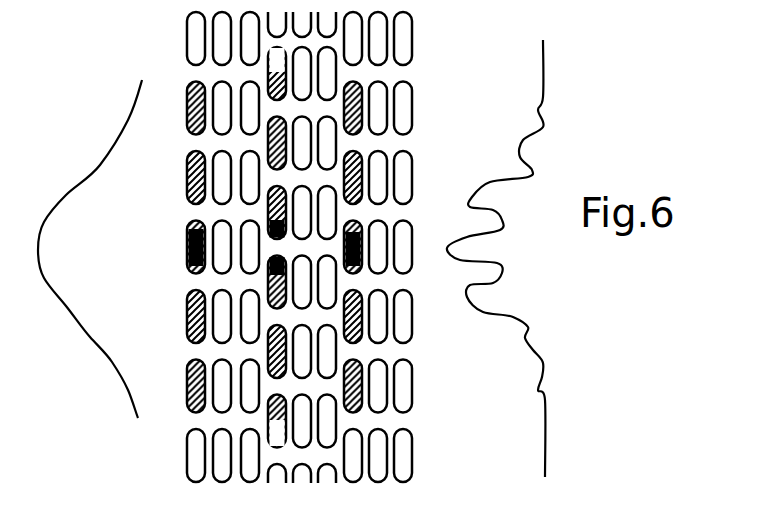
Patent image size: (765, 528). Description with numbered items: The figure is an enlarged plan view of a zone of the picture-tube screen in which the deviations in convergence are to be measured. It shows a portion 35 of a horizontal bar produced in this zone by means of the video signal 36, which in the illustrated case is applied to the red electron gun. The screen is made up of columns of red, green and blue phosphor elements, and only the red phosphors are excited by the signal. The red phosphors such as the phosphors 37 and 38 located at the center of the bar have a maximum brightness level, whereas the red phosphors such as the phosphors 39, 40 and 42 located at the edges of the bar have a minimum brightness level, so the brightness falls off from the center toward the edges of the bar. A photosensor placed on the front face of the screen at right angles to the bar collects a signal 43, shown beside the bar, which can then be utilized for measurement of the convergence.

The portion of a horizontal bar 35 is at (313, 260).
The video signal 36 is at (90, 337).
The red phosphor 37 is at (189, 249).
The red phosphor 38 is at (350, 223).
The red phosphor 39 is at (193, 125).
The red phosphor 40 is at (347, 89).
The red phosphor 42 is at (348, 433).
The signal 43 is at (533, 348).